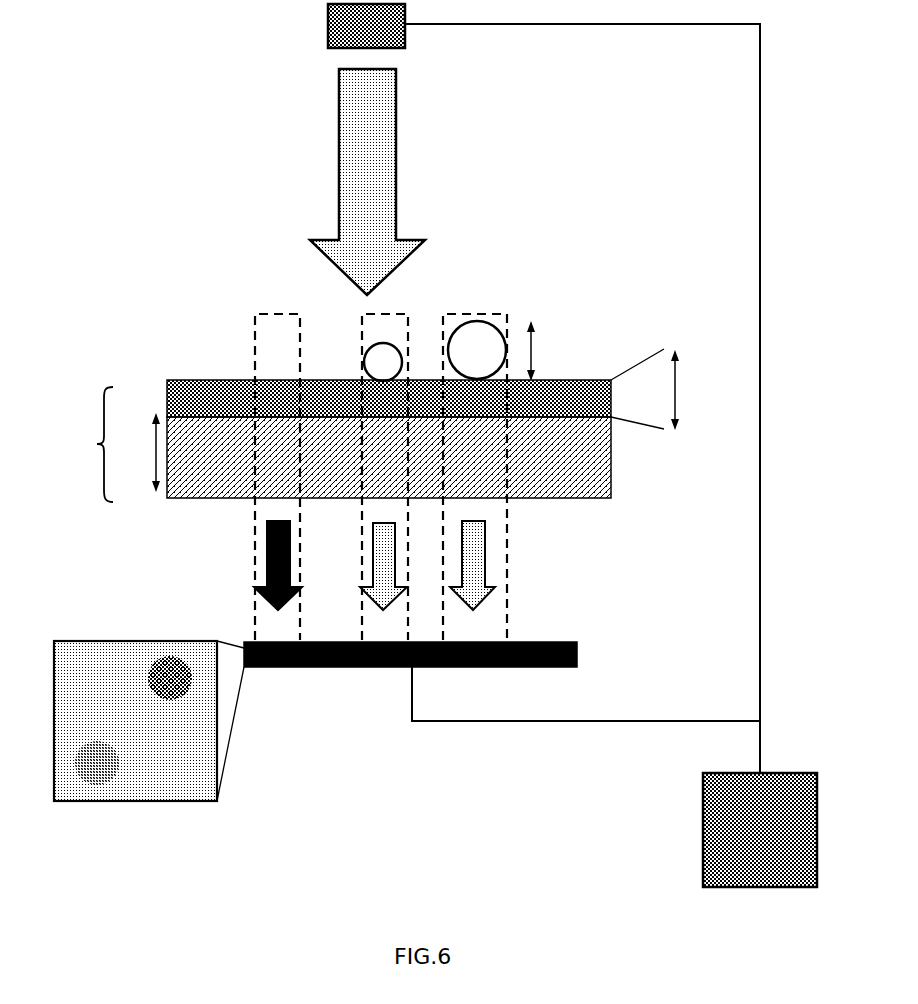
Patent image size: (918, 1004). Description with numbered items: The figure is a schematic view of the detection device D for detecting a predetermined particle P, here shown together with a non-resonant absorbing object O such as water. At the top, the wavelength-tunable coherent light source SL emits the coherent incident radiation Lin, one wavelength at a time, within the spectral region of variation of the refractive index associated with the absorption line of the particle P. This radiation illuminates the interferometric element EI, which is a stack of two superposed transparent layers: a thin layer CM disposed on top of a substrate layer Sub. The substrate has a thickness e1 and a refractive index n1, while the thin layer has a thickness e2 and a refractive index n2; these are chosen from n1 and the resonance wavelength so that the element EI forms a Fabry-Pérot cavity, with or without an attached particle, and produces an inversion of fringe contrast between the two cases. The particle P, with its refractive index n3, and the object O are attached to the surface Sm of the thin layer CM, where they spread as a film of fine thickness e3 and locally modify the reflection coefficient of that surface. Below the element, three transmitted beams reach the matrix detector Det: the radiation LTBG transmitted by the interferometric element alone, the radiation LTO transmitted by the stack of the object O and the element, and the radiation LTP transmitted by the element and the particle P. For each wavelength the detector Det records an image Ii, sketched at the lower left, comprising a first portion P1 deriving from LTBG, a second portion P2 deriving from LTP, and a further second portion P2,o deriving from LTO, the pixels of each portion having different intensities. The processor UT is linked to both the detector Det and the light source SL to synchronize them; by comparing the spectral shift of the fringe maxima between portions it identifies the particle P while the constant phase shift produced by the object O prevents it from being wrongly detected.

The wavelength-tunable coherent light source SL is at (328, 25).
The incident radiation Lin is at (397, 140).
The detection device D is at (245, 227).
The thin layer CM is at (201, 380).
The substrate layer Sub is at (611, 453).
The surface of the thin layer Sm is at (611, 380).
The interferometric element EI is at (82, 444).
The thickness of the substrate e1 is at (143, 452).
The thickness of the thin layer e2 is at (661, 389).
The thickness of attached particles e3 is at (551, 351).
The refractive index of the substrate n1 is at (582, 481).
The refractive index of the thin layer n2 is at (582, 404).
The refractive index of the particle n3 is at (474, 354).
The object O is at (397, 343).
The predetermined particle P is at (478, 321).
The incident radiation transmitted by the interferometric element alone LTBG is at (257, 588).
The incident radiation transmitted by the object and interferometric element LTO is at (362, 587).
The incident radiation transmitted by the interferometric element and particle LTP is at (495, 590).
The detector Det is at (577, 655).
The processor UT is at (760, 887).
The image Ii is at (137, 802).
The first portion of the image P1 is at (101, 685).
The second portion of the image P2 is at (170, 658).
The second portion of the image associated with the object P2,o is at (97, 783).